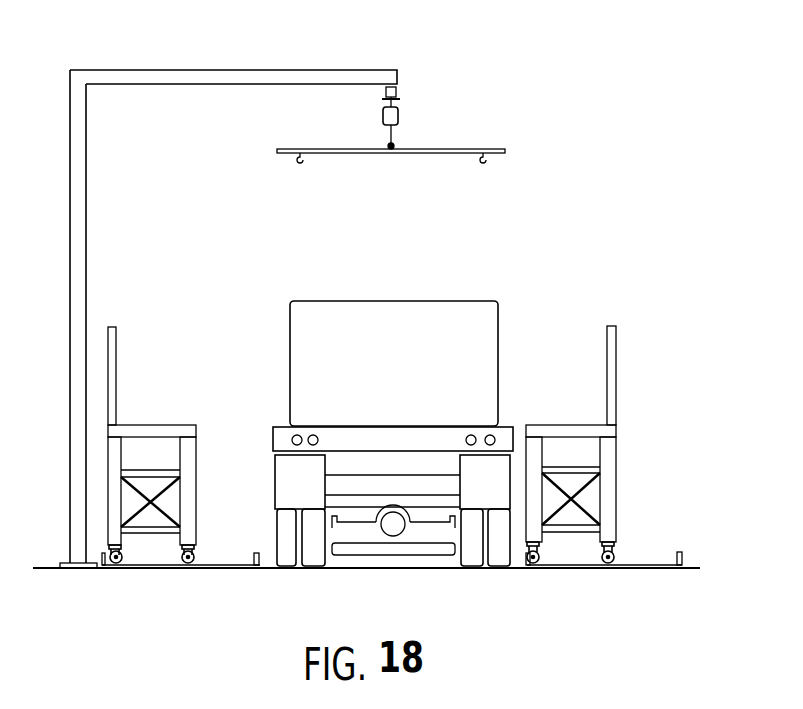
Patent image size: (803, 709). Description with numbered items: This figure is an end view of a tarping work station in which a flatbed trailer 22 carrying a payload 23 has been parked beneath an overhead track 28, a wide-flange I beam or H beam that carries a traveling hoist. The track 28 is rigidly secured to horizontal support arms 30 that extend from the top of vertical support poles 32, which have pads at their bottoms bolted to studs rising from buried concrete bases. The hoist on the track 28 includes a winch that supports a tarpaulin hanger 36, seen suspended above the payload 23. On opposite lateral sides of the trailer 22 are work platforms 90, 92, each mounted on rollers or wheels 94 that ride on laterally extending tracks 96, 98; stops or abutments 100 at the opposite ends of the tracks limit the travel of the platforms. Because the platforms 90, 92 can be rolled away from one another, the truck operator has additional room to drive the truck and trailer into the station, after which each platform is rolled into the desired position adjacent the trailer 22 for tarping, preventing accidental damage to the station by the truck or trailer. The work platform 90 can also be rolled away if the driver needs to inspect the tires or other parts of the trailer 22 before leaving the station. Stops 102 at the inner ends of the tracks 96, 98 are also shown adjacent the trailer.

The flatbed trailer 22 is at (275, 427).
The payload 23 is at (453, 300).
The overhead track 28 is at (395, 88).
The support arms 30 is at (253, 68).
The vertical support poles 32 is at (88, 183).
The tarpaulin hanger 36 is at (463, 148).
The work platform 90 is at (163, 423).
The work platform 92 is at (568, 422).
The rollers or wheels 94 is at (180, 568).
The track 96 is at (230, 565).
The track 98 is at (645, 563).
The stops or abutments 100 is at (75, 573).
The track stops 102 is at (260, 560).